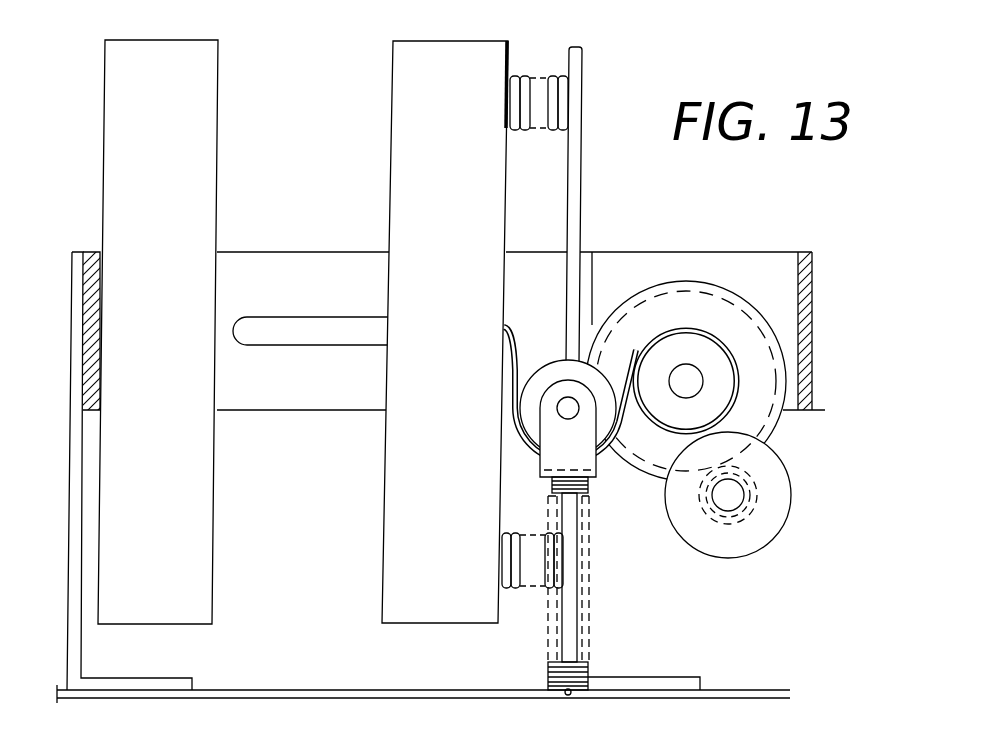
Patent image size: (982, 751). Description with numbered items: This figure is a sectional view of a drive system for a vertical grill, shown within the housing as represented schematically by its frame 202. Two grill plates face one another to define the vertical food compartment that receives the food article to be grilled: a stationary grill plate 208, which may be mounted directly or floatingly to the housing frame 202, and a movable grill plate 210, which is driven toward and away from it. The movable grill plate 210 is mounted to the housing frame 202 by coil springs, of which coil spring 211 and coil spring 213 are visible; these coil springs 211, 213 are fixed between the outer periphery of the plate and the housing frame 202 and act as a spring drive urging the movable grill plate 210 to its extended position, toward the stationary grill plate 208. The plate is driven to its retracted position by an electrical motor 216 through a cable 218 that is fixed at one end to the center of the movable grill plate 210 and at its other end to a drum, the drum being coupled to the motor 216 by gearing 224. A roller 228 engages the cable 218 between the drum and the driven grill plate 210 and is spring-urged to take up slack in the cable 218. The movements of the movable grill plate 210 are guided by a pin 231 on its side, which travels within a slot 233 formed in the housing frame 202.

The housing frame 202 is at (78, 250).
The stationary grill plate 208 is at (142, 52).
The movable grill plate 210 is at (414, 60).
The coil spring 211 is at (545, 107).
The coil spring 213 is at (512, 548).
The electrical motor 216 is at (783, 512).
The cable 218 is at (513, 330).
The gearing 224 is at (640, 302).
The roller 228 is at (590, 371).
The pin 231 is at (457, 370).
The slot 233 is at (305, 312).